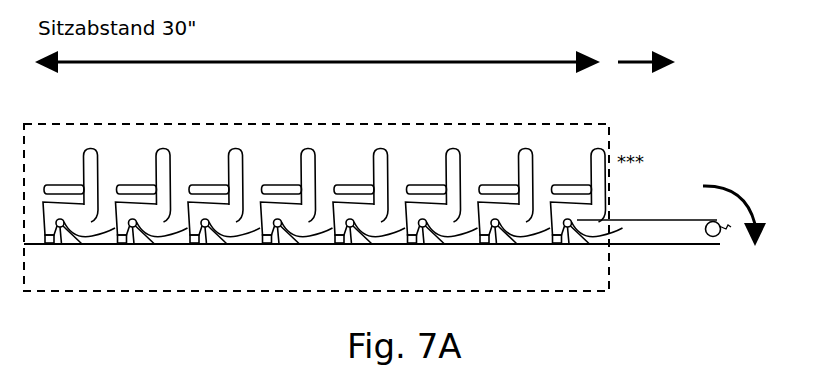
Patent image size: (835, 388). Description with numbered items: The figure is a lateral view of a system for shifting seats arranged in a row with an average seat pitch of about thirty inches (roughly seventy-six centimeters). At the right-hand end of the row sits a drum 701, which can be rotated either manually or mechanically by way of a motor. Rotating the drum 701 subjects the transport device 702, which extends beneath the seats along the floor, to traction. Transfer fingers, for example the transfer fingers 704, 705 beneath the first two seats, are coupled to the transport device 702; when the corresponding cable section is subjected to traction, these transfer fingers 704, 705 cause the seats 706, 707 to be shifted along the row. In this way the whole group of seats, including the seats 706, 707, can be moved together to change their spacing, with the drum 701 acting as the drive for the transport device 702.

The drum 701 is at (718, 237).
The transport device 702 is at (640, 220).
The transfer finger 704 is at (62, 244).
The transfer finger 705 is at (131, 282).
The seat 706 is at (90, 147).
The seat 707 is at (182, 151).